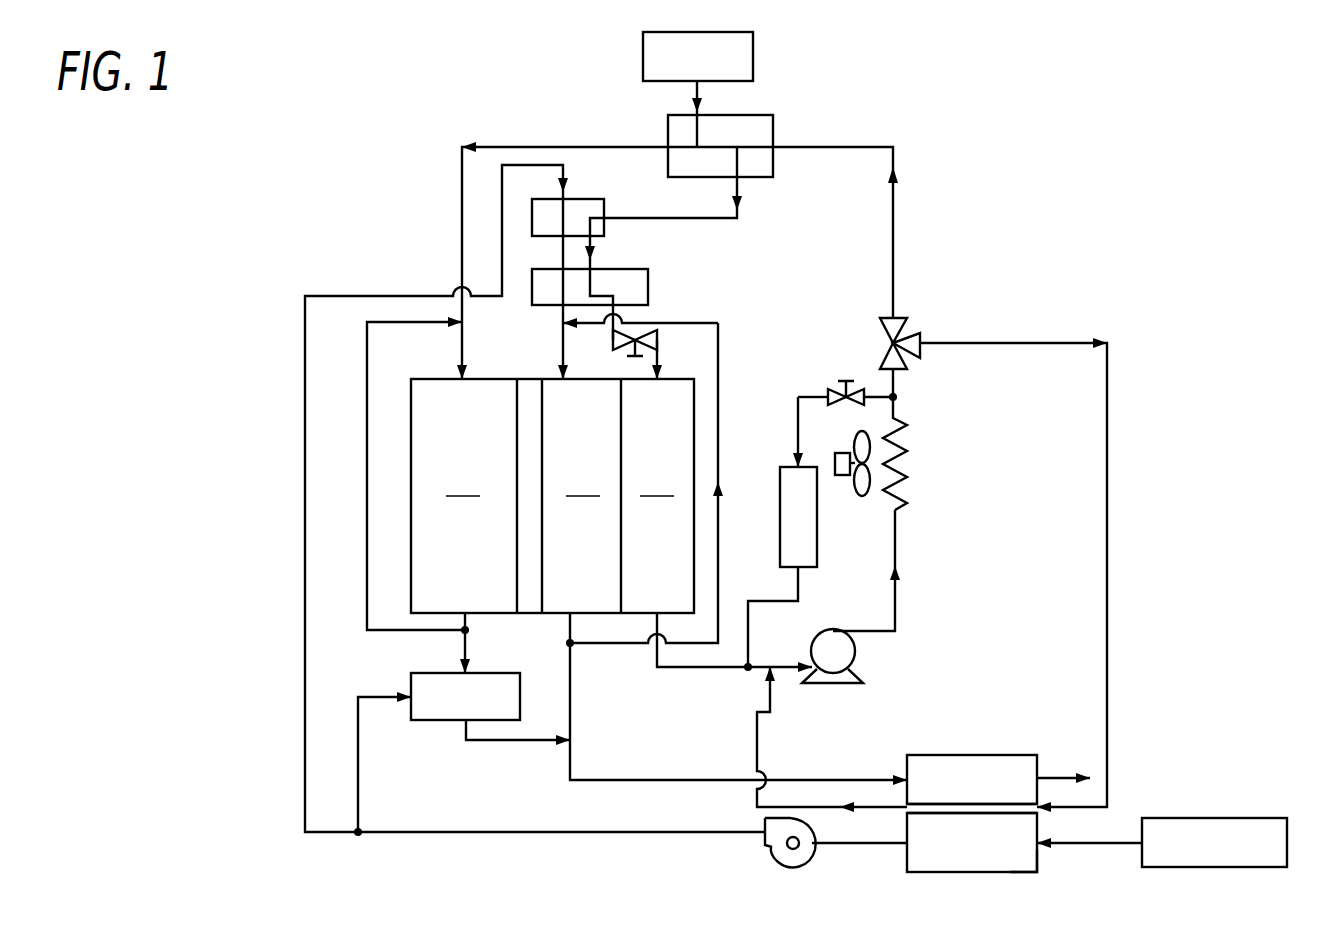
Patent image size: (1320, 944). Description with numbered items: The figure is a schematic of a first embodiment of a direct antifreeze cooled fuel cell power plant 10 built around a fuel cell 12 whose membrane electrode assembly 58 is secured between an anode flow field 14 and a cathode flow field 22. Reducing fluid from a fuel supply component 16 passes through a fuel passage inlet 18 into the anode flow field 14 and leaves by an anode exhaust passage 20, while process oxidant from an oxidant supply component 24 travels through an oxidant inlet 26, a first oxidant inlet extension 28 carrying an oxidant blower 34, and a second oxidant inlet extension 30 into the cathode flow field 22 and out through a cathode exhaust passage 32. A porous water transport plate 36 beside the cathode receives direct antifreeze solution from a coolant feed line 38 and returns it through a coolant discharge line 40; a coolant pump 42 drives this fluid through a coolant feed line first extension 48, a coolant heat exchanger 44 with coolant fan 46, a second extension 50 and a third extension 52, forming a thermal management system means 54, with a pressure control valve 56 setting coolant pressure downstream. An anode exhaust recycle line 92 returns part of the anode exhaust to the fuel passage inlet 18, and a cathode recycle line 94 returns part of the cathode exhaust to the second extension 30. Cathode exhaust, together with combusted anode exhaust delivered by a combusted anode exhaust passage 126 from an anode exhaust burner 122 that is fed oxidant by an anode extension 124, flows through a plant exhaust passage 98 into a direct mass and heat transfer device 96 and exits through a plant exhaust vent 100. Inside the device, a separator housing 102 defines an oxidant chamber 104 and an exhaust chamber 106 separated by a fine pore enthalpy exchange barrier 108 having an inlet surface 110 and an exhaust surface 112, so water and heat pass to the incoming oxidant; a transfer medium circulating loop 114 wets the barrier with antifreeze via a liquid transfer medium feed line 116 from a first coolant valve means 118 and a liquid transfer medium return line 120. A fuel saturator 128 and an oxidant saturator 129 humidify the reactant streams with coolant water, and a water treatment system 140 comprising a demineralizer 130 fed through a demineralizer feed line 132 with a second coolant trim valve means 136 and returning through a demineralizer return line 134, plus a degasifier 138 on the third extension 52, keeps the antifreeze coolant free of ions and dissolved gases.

The direct antifreeze cooled fuel cell power plant 10 is at (995, 85).
The fuel cell 12 is at (484, 358).
The anode flow field 14 is at (463, 480).
The fuel supply component 16 is at (643, 52).
The fuel passage inlet 18 is at (563, 145).
The anode exhaust passage 20 is at (465, 640).
The cathode flow field 22 is at (583, 480).
The oxidant supply component 24 is at (1235, 822).
The oxidant inlet 26 is at (1110, 842).
The first oxidant inlet extension 28 is at (872, 842).
The second oxidant inlet extension 30 is at (347, 295).
The cathode exhaust passage 32 is at (572, 707).
The oxidant blower 34 is at (777, 857).
The porous water transport plate 36 is at (657, 480).
The coolant feed line 38 is at (660, 360).
The coolant discharge line 40 is at (665, 670).
The coolant pump 42 is at (842, 645).
The coolant heat exchanger 44 is at (898, 462).
The coolant fan 46 is at (862, 496).
The coolant feed line first extension 48 is at (897, 545).
The coolant feed line second extension 50 is at (897, 262).
The coolant feed line third extension 52 is at (707, 218).
The thermal management system means 54 is at (875, 615).
The pressure control valve 56 is at (619, 345).
The membrane electrode assembly 58 is at (523, 383).
The anode exhaust recycle line 92 is at (367, 580).
The cathode recycle line 94 is at (720, 540).
The direct mass and heat transfer device 96 is at (998, 715).
The plant exhaust passage 98 is at (815, 778).
The plant exhaust vent 100 is at (1048, 777).
The separator housing 102 is at (913, 873).
The oxidant chamber 104 is at (1045, 870).
The exhaust chamber 106 is at (936, 765).
The fine pore enthalpy exchange barrier 108 is at (988, 813).
The inlet surface 110 is at (928, 813).
The exhaust surface 112 is at (955, 804).
The transfer medium circulating loop 114 is at (1060, 528).
The liquid transfer medium feed line 116 is at (1108, 588).
The first coolant valve means 118 is at (885, 320).
The liquid transfer medium return line 120 is at (755, 728).
The anode exhaust burner 122 is at (503, 680).
The anode extension 124 is at (360, 812).
The combusted anode exhaust passage 126 is at (508, 742).
The fuel saturator 128 is at (750, 128).
The oxidant saturator 129 is at (582, 202).
The demineralizer 130 is at (787, 478).
The demineralizer feed line 132 is at (812, 396).
The demineralizer return line 134 is at (750, 640).
The second coolant trim valve means 136 is at (860, 388).
The degasifier 138 is at (627, 277).
The water treatment system 140 is at (750, 352).